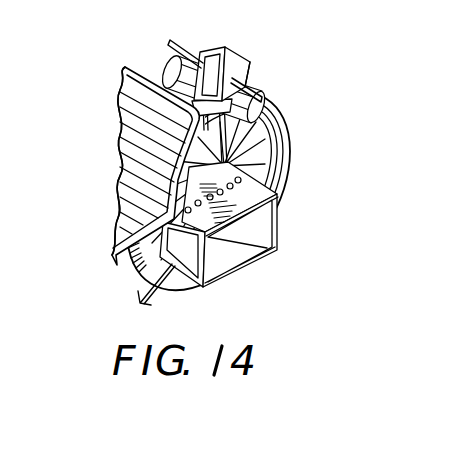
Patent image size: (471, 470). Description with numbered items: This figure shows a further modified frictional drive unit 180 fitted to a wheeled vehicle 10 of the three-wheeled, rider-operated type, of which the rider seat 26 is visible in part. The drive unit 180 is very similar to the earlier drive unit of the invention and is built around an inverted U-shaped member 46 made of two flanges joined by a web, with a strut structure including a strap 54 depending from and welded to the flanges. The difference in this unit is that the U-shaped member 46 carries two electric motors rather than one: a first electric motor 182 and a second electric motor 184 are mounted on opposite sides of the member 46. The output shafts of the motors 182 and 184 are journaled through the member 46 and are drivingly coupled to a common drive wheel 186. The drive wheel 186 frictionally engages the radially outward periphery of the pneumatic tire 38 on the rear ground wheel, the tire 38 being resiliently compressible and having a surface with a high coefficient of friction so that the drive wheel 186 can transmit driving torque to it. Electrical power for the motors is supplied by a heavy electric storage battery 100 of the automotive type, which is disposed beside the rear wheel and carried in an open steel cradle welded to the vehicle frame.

The wheeled vehicle 10 is at (118, 151).
The rider seat 26 is at (123, 82).
The pneumatic tire 38 is at (283, 168).
The strap 54 is at (230, 157).
The inverted U-shaped member 46 is at (248, 57).
The electric storage battery 100 is at (257, 232).
The drive unit 180 is at (253, 77).
The electric motor 182 is at (259, 109).
The electric motor 184 is at (187, 50).
The drive wheel 186 is at (242, 48).